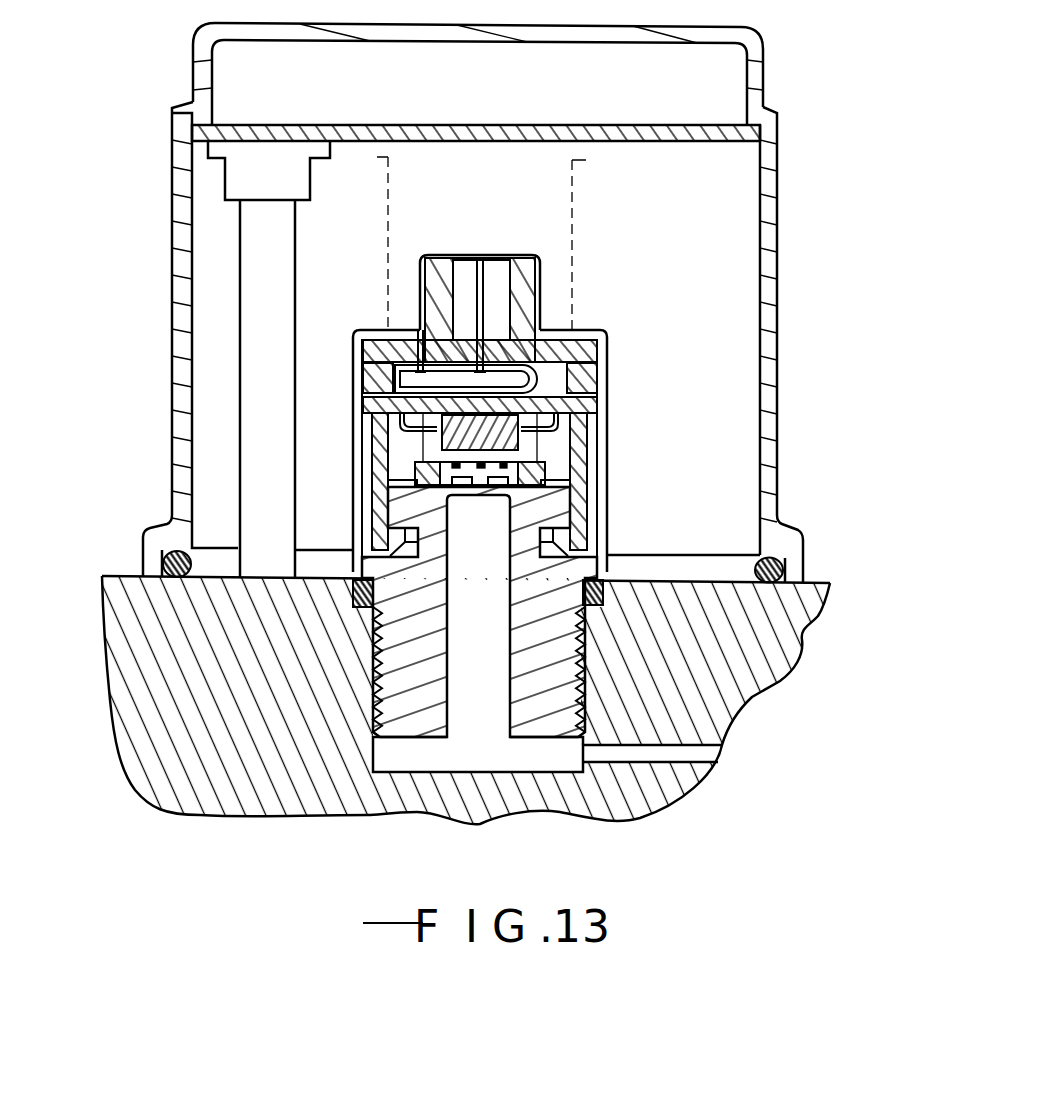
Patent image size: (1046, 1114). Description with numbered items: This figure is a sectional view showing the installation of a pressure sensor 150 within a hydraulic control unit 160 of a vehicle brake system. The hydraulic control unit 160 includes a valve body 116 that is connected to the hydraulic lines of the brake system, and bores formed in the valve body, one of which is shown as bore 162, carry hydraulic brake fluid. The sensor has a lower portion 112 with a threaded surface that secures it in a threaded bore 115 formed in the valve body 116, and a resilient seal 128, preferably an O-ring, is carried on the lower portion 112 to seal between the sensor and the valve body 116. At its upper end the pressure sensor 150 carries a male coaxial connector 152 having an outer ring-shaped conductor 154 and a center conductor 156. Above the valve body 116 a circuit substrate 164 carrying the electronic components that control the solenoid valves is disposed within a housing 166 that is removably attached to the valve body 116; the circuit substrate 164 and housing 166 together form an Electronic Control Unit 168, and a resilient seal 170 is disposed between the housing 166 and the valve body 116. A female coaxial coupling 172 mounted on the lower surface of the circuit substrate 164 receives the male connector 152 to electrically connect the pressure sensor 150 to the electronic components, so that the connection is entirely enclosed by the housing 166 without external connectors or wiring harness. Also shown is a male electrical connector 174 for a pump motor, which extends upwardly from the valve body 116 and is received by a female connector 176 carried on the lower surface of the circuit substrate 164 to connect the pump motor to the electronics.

The lower portion 112 is at (423, 722).
The threaded bore 115 is at (555, 770).
The valve body 116 is at (728, 702).
The seal 128 is at (601, 594).
The pressure sensor 150 is at (645, 270).
The male coaxial connector 152 is at (517, 270).
The outer ring-shaped conductor 154 is at (542, 297).
The center conductor 156 is at (488, 255).
The hydraulic control unit 160 is at (818, 101).
The bore 162 is at (713, 755).
The circuit substrate 164 is at (663, 143).
The housing 166 is at (772, 290).
The Electronic Control Unit 168 is at (150, 165).
The resilient seal 170 is at (652, 563).
The female coaxial coupling 172 is at (402, 197).
The male electrical connector 174 is at (257, 345).
The female connector 176 is at (297, 182).